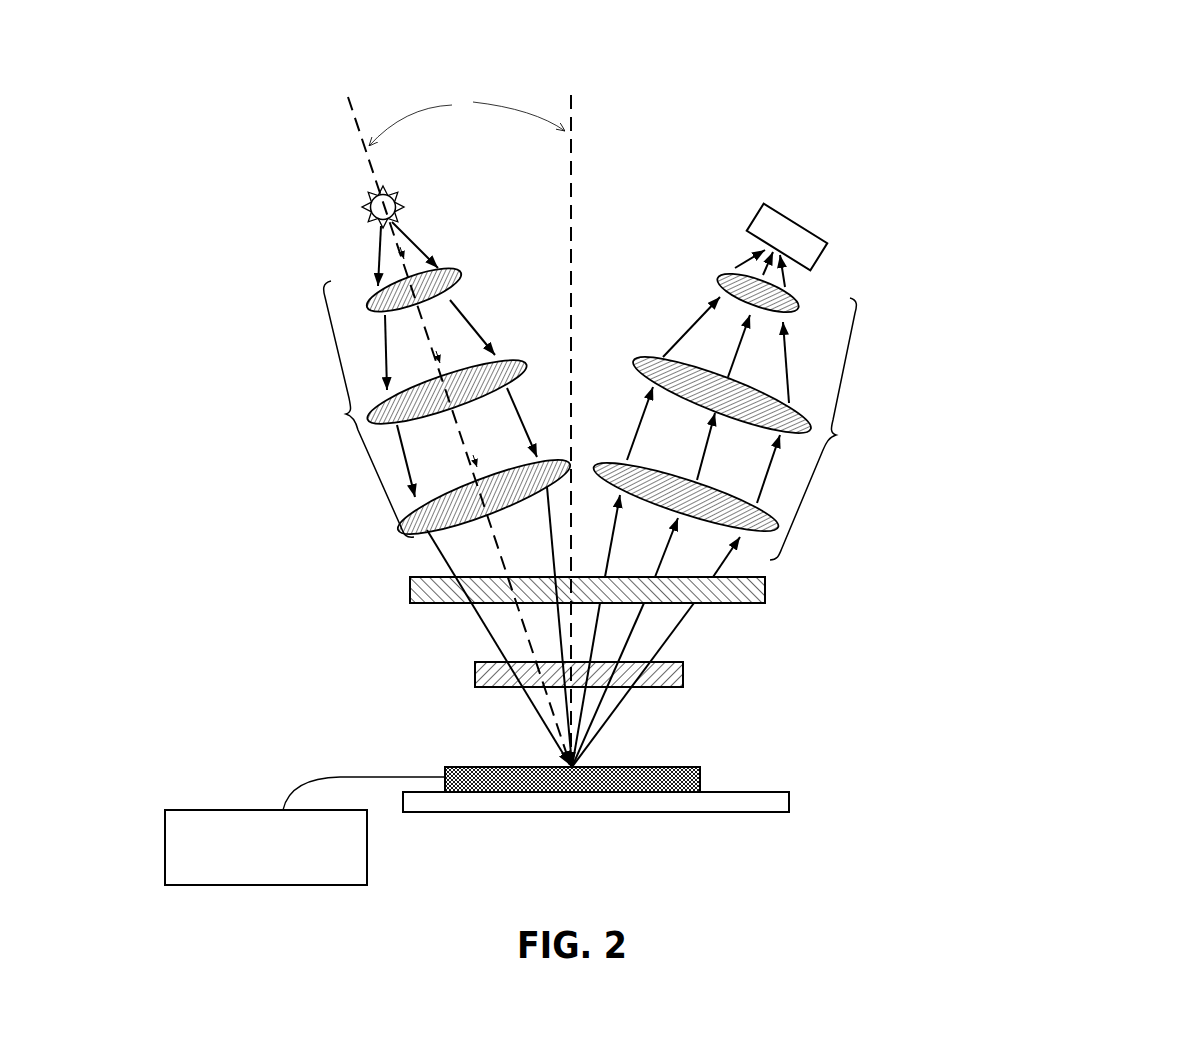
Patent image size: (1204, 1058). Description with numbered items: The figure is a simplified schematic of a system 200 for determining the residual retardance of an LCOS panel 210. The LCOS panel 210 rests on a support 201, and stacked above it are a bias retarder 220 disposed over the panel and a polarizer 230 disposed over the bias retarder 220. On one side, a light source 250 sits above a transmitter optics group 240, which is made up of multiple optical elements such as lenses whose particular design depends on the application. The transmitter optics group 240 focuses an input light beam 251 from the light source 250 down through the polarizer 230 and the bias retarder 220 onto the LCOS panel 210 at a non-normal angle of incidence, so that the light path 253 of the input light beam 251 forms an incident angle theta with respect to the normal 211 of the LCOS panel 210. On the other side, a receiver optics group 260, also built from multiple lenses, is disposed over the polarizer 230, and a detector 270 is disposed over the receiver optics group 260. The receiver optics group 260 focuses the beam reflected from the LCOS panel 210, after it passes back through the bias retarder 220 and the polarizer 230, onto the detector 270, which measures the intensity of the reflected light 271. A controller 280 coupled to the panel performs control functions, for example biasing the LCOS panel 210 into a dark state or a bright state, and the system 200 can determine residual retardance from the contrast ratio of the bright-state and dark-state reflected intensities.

The system 200 is at (1066, 81).
The support 201 is at (732, 812).
The LCOS panel 210 is at (677, 776).
The normal 211 is at (574, 172).
The bias retarder 220 is at (682, 674).
The polarizer 230 is at (711, 592).
The transmitter optics group 240 is at (376, 403).
The light source 250 is at (299, 219).
The input light beam 251 is at (418, 242).
The light path 253 is at (348, 100).
The receiver optics group 260 is at (789, 413).
The detector 270 is at (866, 237).
The light reflected from the LCOS panel 271 is at (747, 258).
The controller 280 is at (348, 859).